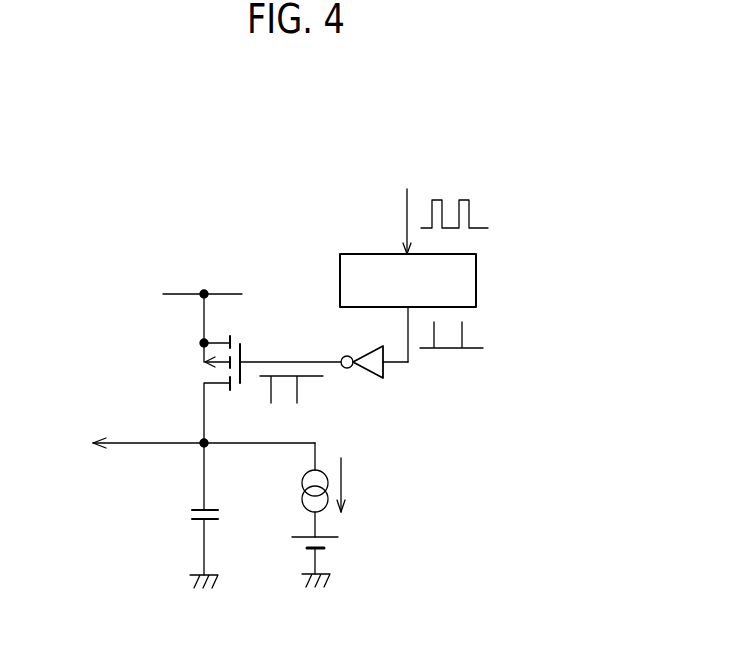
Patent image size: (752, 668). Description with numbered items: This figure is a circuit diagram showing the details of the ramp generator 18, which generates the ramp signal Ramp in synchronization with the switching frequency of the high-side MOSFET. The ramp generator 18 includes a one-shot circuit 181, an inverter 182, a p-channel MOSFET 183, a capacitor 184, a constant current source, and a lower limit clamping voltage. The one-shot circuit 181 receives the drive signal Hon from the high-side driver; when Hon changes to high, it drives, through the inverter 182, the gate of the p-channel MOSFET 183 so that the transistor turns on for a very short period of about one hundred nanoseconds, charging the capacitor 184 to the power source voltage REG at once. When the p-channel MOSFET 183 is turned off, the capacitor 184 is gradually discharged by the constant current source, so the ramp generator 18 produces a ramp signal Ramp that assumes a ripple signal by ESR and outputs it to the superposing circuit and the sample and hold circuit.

The ramp generator 18 is at (324, 158).
The one-shot circuit 181 is at (477, 282).
The inverter 182 is at (368, 380).
The p-channel MOSFET 183 is at (199, 356).
The capacitor 184 is at (186, 513).